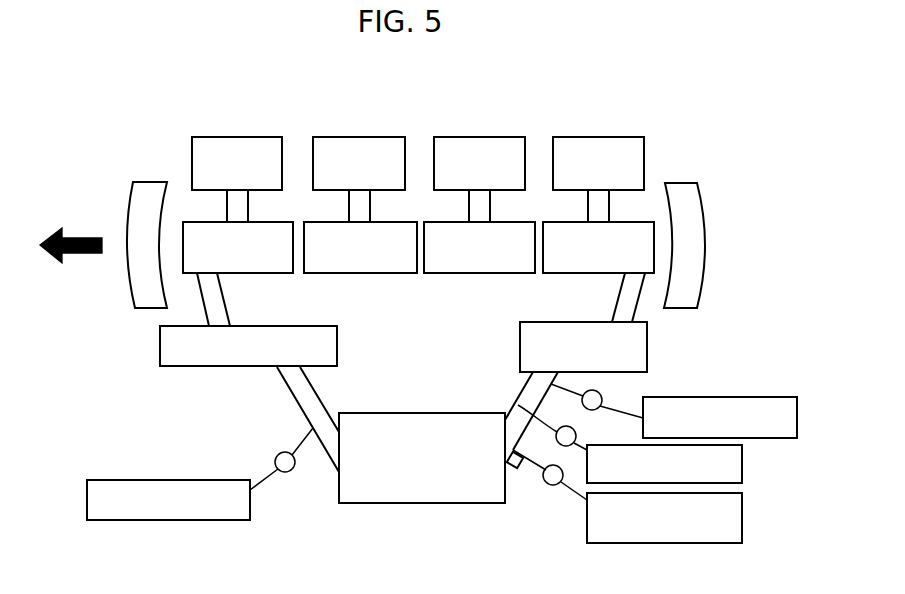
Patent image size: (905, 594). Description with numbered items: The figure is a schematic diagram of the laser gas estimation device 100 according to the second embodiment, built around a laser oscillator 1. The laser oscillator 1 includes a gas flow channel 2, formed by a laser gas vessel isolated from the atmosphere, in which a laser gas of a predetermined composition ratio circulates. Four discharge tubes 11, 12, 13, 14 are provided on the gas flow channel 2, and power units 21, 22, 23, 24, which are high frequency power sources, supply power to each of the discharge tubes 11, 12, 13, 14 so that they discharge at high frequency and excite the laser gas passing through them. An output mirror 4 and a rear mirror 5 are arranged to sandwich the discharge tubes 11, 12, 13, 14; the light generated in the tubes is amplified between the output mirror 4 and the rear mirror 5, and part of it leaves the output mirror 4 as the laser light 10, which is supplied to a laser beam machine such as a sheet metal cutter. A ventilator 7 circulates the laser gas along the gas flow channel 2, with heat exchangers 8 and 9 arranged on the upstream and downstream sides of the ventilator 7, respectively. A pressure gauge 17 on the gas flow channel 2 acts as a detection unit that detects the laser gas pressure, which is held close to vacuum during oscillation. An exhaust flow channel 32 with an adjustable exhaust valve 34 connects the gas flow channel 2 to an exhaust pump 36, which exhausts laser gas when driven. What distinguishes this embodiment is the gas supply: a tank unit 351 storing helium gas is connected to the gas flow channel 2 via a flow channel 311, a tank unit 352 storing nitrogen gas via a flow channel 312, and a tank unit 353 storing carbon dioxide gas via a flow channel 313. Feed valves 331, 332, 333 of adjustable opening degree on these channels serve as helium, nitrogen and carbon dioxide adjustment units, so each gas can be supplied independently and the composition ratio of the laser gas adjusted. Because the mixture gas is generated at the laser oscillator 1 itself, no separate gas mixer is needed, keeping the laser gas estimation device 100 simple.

The laser oscillator 1 is at (531, 102).
The laser gas estimation device 100 is at (681, 91).
The gas flow channel 2 is at (283, 380).
The output mirror 4 is at (148, 182).
The rear mirror 5 is at (683, 183).
The ventilator 7 is at (423, 503).
The heat exchanger 8 is at (543, 322).
The heat exchanger 9 is at (160, 345).
The laser light 10 is at (80, 253).
The discharge tube 11 is at (257, 273).
The discharge tube 12 is at (363, 273).
The discharge tube 13 is at (478, 273).
The discharge tube 14 is at (552, 273).
The pressure gauge 17 is at (521, 468).
The power unit 21 is at (237, 137).
The power unit 22 is at (360, 137).
The power unit 23 is at (480, 137).
The power unit 24 is at (598, 137).
The exhaust flow channel 32 is at (266, 484).
The exhaust valve 34 is at (277, 457).
The exhaust pump 36 is at (123, 480).
The flow channel 311 is at (618, 408).
The flow channel 312 is at (540, 425).
The flow channel 313 is at (578, 496).
The feed valve 331 is at (600, 392).
The feed valve 332 is at (545, 422).
The feed valve 333 is at (554, 486).
The tank unit 351 is at (762, 397).
The tank unit 352 is at (742, 465).
The tank unit 353 is at (742, 523).